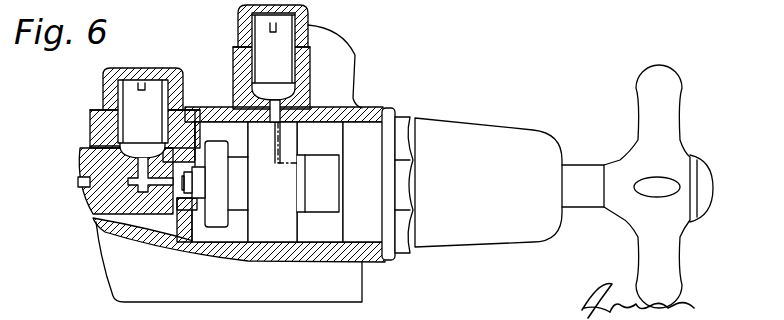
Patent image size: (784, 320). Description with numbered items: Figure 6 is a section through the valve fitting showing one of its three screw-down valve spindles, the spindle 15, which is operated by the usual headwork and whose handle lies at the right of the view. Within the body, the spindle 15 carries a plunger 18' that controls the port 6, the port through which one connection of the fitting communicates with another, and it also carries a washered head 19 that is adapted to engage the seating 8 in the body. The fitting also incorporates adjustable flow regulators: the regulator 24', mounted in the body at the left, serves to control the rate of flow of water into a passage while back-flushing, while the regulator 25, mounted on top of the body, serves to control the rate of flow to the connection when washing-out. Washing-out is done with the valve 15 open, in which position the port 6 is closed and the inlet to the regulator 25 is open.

The port 6 is at (287, 147).
The seating 8 is at (183, 200).
The screw-down valve spindle 15 is at (583, 173).
The plunger 18' is at (283, 209).
The washered head 19 is at (217, 228).
The regulator 24' is at (118, 130).
The regulator 25 is at (275, 53).